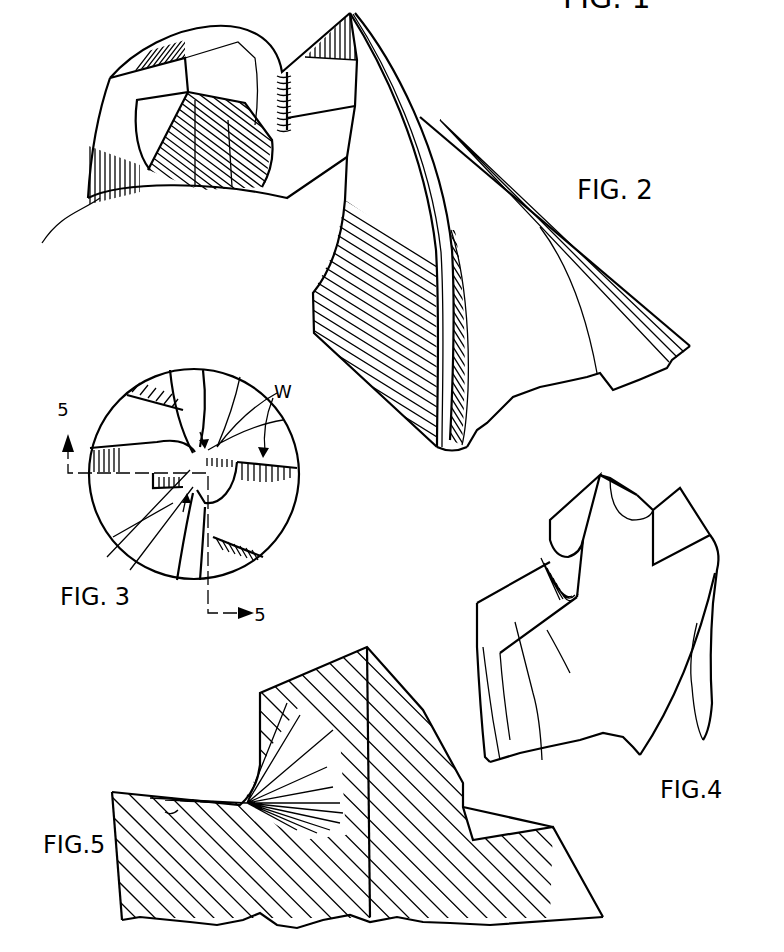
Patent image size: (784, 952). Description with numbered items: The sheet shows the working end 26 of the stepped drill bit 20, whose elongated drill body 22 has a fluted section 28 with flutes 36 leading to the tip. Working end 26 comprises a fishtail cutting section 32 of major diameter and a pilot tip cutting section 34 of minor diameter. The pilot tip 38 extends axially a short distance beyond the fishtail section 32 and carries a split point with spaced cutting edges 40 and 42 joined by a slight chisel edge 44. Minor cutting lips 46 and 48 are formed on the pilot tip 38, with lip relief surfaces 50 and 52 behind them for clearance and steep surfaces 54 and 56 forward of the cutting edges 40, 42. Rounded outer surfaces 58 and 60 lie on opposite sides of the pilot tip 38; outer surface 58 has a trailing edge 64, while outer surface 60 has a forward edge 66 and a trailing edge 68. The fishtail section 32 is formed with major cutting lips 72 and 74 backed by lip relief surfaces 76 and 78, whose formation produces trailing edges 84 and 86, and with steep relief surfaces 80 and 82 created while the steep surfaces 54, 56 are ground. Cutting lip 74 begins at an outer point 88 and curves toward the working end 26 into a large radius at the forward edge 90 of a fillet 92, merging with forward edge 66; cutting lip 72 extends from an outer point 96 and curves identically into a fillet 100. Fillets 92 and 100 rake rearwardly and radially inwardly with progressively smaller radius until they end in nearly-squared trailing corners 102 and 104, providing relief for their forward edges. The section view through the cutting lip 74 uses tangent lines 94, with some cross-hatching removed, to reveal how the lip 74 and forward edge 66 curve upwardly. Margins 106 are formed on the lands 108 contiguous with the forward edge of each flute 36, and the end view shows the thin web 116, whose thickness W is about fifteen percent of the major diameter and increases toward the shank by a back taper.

In FIG. 2, the stepped drill bit 20 is at (598, 162).
In FIG. 4, the stepped drill bit 20 is at (483, 533).
In FIG. 2, the drill body 22 is at (630, 275).
In FIG. 2, the working end 26 is at (78, 103).
In FIG. 2, the fluted section 28 is at (528, 195).
In FIG. 2, the fishtail cutting section 32 is at (57, 225).
In FIG. 3, the fishtail cutting section 32 is at (328, 417).
In FIG. 2, the pilot tip cutting section 34 is at (106, 60).
In FIG. 3, the pilot tip cutting section 34 is at (297, 513).
In FIG. 2, the flute 36 is at (462, 183).
In FIG. 3, the flute 36 is at (230, 393).
In FIG. 4, the flute 36 is at (613, 707).
In FIG. 2, the pilot tip 38 is at (132, 99).
In FIG. 4, the pilot tip 38 is at (556, 492).
In FIG. 2, the cutting edge 40 is at (196, 192).
In FIG. 3, the cutting edge 40 is at (187, 566).
In FIG. 4, the cutting edge 40 is at (603, 470).
In FIG. 5, the cutting edge 40 is at (368, 647).
In FIG. 3, the cutting edge 42 is at (207, 415).
In FIG. 4, the cutting edge 42 is at (592, 470).
In FIG. 2, the chisel edge 44 is at (125, 127).
In FIG. 3, the chisel edge 44 is at (170, 560).
In FIG. 2, the minor cutting lip 46 is at (178, 195).
In FIG. 3, the minor cutting lip 46 is at (132, 546).
In FIG. 4, the minor cutting lip 46 is at (597, 520).
In FIG. 3, the minor cutting lip 48 is at (283, 420).
In FIG. 4, the minor cutting lip 48 is at (625, 473).
In FIG. 2, the lip relief surface 50 is at (125, 200).
In FIG. 3, the lip relief surface 50 is at (67, 458).
In FIG. 4, the lip relief surface 50 is at (583, 500).
In FIG. 5, the lip relief surface 50 is at (343, 663).
In FIG. 3, the lip relief surface 52 is at (280, 432).
In FIG. 4, the lip relief surface 52 is at (643, 462).
In FIG. 2, the steep surface 54 is at (230, 193).
In FIG. 3, the steep surface 54 is at (205, 580).
In FIG. 4, the steep surface 54 is at (655, 485).
In FIG. 5, the steep surface 54 is at (423, 710).
In FIG. 3, the steep surface 56 is at (186, 372).
In FIG. 2, the rounded outer surface 58 is at (285, 65).
In FIG. 4, the rounded outer surface 60 is at (545, 556).
In FIG. 2, the trailing edge 64 is at (268, 195).
In FIG. 4, the trailing edge 64 is at (650, 557).
In FIG. 2, the forward edge 66 is at (145, 197).
In FIG. 4, the forward edge 66 is at (588, 576).
In FIG. 5, the forward edge 66 is at (260, 715).
In FIG. 4, the trailing edge 68 is at (545, 540).
In FIG. 3, the major cutting lip 72 is at (272, 455).
In FIG. 4, the major cutting lip 72 is at (672, 490).
In FIG. 2, the major cutting lip 74 is at (93, 214).
In FIG. 3, the major cutting lip 74 is at (106, 526).
In FIG. 4, the major cutting lip 74 is at (547, 633).
In FIG. 5, the major cutting lip 74 is at (133, 790).
In FIG. 2, the lip relief surface 76 is at (337, 87).
In FIG. 3, the lip relief surface 76 is at (250, 498).
In FIG. 4, the lip relief surface 76 is at (686, 526).
In FIG. 5, the lip relief surface 76 is at (517, 830).
In FIG. 2, the lip relief surface 78 is at (105, 140).
In FIG. 3, the lip relief surface 78 is at (100, 438).
In FIG. 4, the lip relief surface 78 is at (515, 620).
In FIG. 2, the steep relief surface 80 is at (320, 296).
In FIG. 3, the steep relief surface 80 is at (255, 577).
In FIG. 4, the steep relief surface 80 is at (697, 690).
In FIG. 5, the steep relief surface 80 is at (573, 900).
In FIG. 2, the steep relief surface 82 is at (170, 48).
In FIG. 3, the steep relief surface 82 is at (168, 380).
In FIG. 2, the trailing edge 84 is at (307, 207).
In FIG. 3, the trailing edge 84 is at (285, 566).
In FIG. 4, the trailing edge 84 is at (706, 551).
In FIG. 5, the trailing edge 84 is at (533, 837).
In FIG. 2, the trailing edge 86 is at (137, 58).
In FIG. 3, the trailing edge 86 is at (145, 386).
In FIG. 4, the trailing edge 86 is at (477, 603).
In FIG. 2, the outer point 88 is at (95, 203).
In FIG. 3, the outer point 88 is at (103, 498).
In FIG. 4, the outer point 88 is at (523, 727).
In FIG. 5, the outer point 88 is at (110, 788).
In FIG. 2, the forward edge 90 is at (148, 195).
In FIG. 4, the forward edge 90 is at (580, 613).
In FIG. 5, the forward edge 90 is at (240, 800).
In FIG. 4, the fillet 92 is at (530, 557).
In FIG. 5, the tangent lines 94 is at (287, 703).
In FIG. 2, the outer point 96 is at (360, 16).
In FIG. 3, the outer point 96 is at (277, 465).
In FIG. 4, the outer point 96 is at (680, 484).
In FIG. 2, the fillet 100 is at (332, 107).
In FIG. 4, the trailing corner 102 is at (553, 553).
In FIG. 2, the trailing corner 104 is at (280, 200).
In FIG. 4, the trailing corner 104 is at (655, 578).
In FIG. 2, the margin 106 is at (490, 157).
In FIG. 3, the margin 106 is at (282, 480).
In FIG. 4, the margin 106 is at (498, 712).
In FIG. 5, the margin 106 is at (110, 817).
In FIG. 2, the land 108 is at (375, 133).
In FIG. 3, the land 108 is at (108, 412).
In FIG. 4, the land 108 is at (478, 650).
In FIG. 5, the land 108 is at (480, 650).
In FIG. 3, the web 116 is at (115, 522).